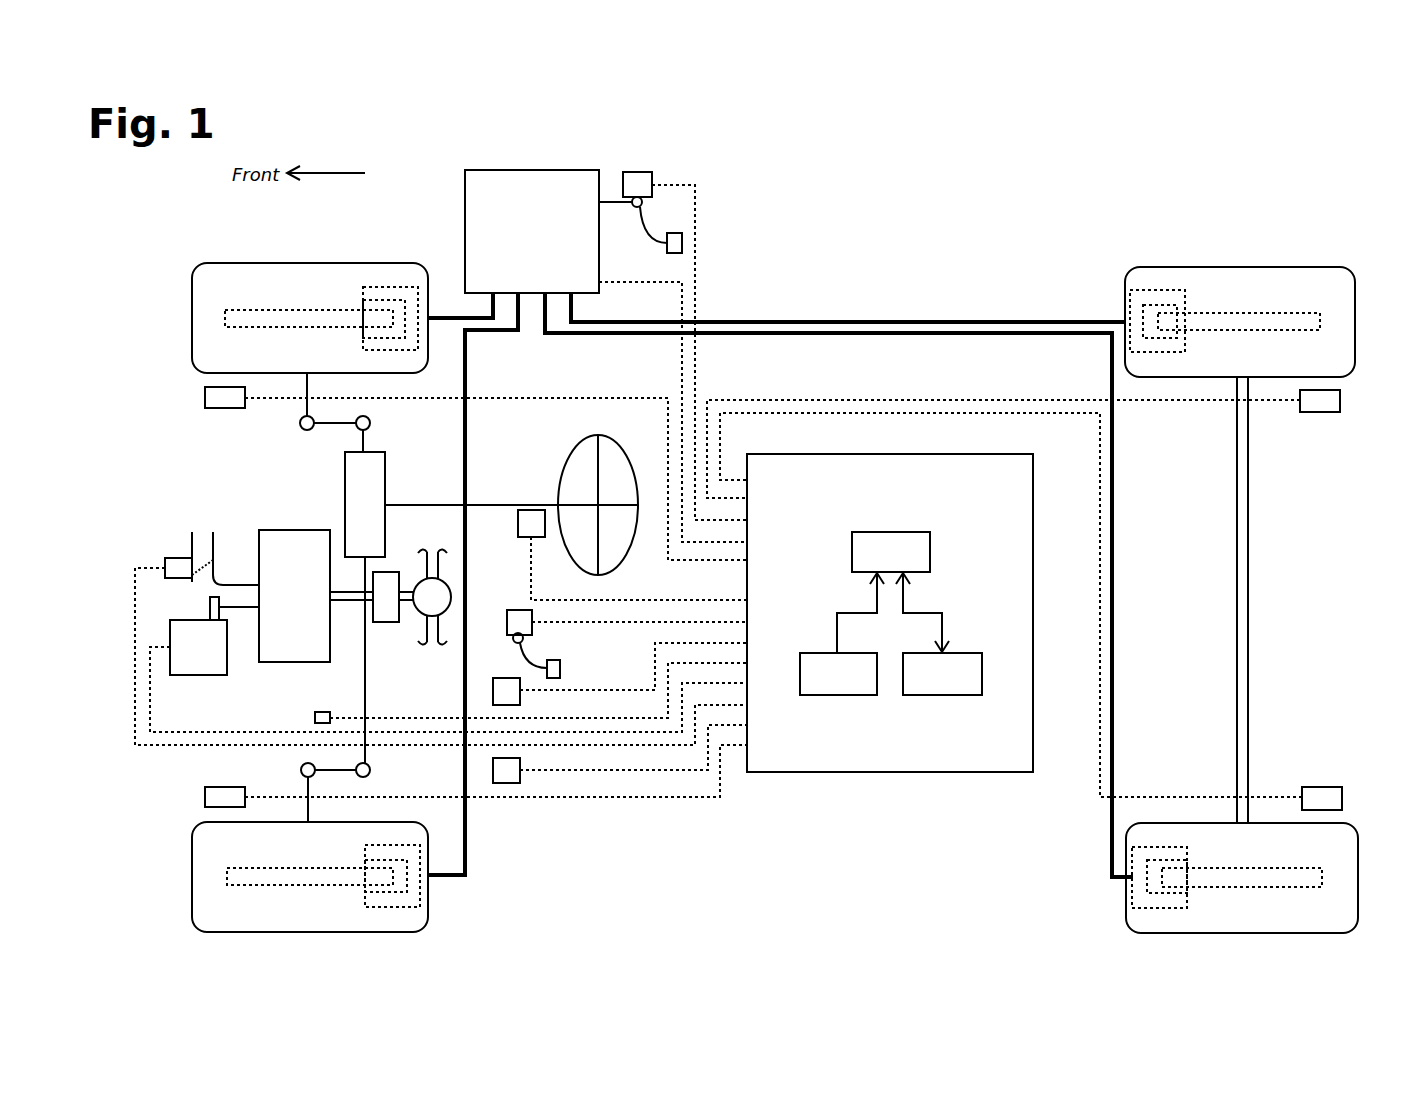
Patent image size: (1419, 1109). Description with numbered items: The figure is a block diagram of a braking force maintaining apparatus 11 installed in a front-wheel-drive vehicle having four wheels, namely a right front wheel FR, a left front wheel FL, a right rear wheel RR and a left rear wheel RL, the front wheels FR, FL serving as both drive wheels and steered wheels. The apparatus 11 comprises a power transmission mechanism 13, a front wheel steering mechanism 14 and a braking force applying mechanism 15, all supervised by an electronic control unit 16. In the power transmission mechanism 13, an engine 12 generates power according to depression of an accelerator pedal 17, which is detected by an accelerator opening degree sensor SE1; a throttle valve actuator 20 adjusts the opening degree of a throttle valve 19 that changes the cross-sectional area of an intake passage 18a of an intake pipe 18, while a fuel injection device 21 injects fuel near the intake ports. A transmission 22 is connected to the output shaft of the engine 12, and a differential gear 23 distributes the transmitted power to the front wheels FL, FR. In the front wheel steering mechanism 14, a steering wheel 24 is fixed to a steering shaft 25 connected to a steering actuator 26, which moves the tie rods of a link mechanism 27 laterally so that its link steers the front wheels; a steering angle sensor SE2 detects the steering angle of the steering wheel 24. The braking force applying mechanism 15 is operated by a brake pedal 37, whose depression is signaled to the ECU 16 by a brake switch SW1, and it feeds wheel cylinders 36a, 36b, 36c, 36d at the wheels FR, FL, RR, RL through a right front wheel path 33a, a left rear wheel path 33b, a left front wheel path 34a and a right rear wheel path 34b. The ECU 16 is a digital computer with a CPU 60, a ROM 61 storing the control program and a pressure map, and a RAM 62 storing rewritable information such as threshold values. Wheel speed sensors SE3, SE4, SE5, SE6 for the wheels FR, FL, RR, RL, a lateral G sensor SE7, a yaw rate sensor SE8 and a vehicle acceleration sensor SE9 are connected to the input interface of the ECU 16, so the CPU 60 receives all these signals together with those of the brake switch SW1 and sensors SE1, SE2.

The braking force maintaining apparatus 11 is at (1008, 210).
The engine 12 is at (330, 656).
The power transmission mechanism 13 is at (400, 553).
The front wheel steering mechanism 14 is at (512, 450).
The braking force applying mechanism 15 is at (588, 152).
The electronic control unit 16 is at (890, 639).
The accelerator pedal 17 is at (560, 669).
The intake pipe 18 is at (192, 540).
The intake passage 18a is at (213, 532).
The throttle valve 19 is at (197, 582).
The throttle valve actuator 20 is at (165, 562).
The fuel injection device 21 is at (197, 675).
The transmission 22 is at (385, 622).
The differential gear 23 is at (452, 620).
The steering wheel 24 is at (622, 562).
The steering shaft 25 is at (490, 506).
The steering actuator 26 is at (385, 468).
The link mechanism 27 is at (366, 700).
The right front wheel path 33a is at (431, 317).
The left rear wheel path 33b is at (1026, 335).
The left front wheel path 34a is at (467, 860).
The right rear wheel path 34b is at (1026, 321).
The wheel cylinder 36a is at (390, 287).
The wheel cylinder 36b is at (428, 896).
The wheel cylinder 36c is at (1158, 290).
The wheel cylinder 36d is at (1126, 896).
The brake pedal 37 is at (682, 243).
The CPU 60 is at (930, 551).
The ROM 61 is at (838, 695).
The RAM 62 is at (942, 695).
The brake switch SW1 is at (648, 172).
The accelerator opening degree sensor SE1 is at (532, 632).
The steering angle sensor SE2 is at (532, 510).
The wheel speed sensor SE3 is at (205, 398).
The wheel speed sensor SE4 is at (205, 797).
The wheel speed sensor SE5 is at (1340, 401).
The wheel speed sensor SE6 is at (1342, 798).
The lateral G sensor SE7 is at (520, 700).
The yaw rate sensor SE8 is at (507, 783).
The vehicle acceleration sensor SE9 is at (315, 714).
The right front wheel FR is at (192, 296).
The left front wheel FL is at (192, 908).
The right rear wheel RR is at (1355, 302).
The left rear wheel RL is at (1358, 858).